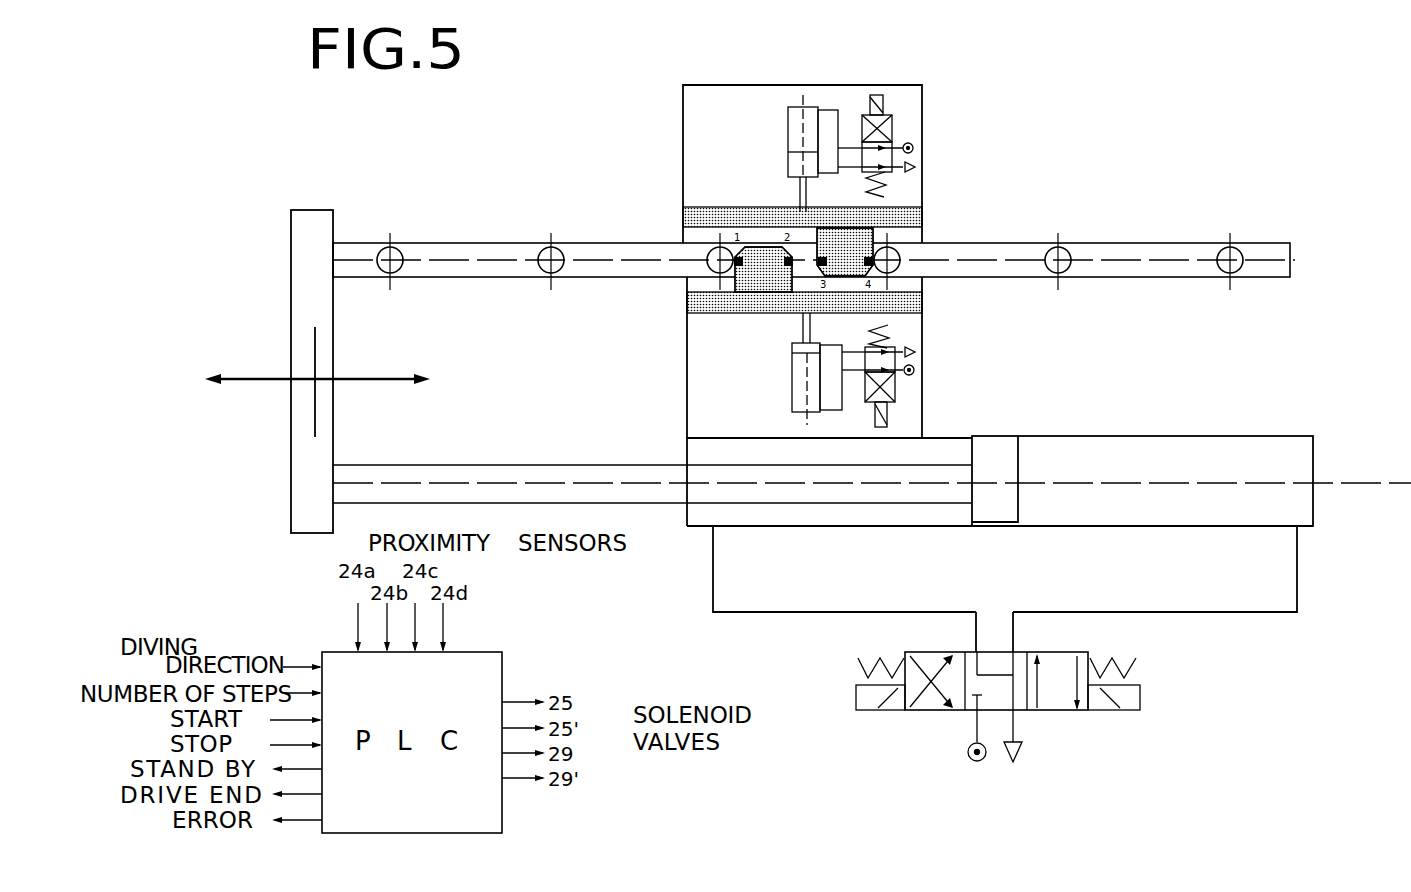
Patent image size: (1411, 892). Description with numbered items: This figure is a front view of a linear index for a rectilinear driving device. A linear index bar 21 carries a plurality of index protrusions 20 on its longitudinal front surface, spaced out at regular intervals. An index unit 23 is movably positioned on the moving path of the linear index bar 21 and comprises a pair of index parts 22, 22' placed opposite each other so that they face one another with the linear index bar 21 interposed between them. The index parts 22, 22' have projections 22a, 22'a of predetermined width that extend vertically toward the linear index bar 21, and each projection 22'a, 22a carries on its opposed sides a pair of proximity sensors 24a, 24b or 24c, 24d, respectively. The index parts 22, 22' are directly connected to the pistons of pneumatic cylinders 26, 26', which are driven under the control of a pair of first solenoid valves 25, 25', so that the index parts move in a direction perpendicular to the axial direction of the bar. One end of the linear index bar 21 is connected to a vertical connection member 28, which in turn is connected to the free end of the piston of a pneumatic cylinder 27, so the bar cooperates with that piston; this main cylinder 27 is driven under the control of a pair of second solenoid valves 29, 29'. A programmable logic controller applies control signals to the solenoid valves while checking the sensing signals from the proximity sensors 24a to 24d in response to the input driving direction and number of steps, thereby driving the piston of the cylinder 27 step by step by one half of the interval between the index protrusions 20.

The index protrusions 20 is at (1222, 249).
The linear index bar 21 is at (1083, 243).
The index part 22 is at (844, 262).
The index part 22' is at (838, 317).
The projection 22a is at (918, 229).
The projection 22'a is at (685, 293).
The index unit 23 is at (898, 84).
The proximity sensor 24a is at (740, 262).
The proximity sensor 24b is at (787, 265).
The proximity sensor 24c is at (825, 258).
The proximity sensor 24d is at (870, 268).
The first solenoid valve 25 is at (933, 132).
The first solenoid valve 25' is at (969, 449).
The pneumatic cylinder 26 is at (806, 113).
The pneumatic cylinder 26' is at (890, 449).
The pneumatic cylinder 27 is at (1258, 526).
The vertical connection member 28 is at (333, 437).
The second solenoid valve 29 is at (972, 741).
The second solenoid valve 29' is at (1130, 720).